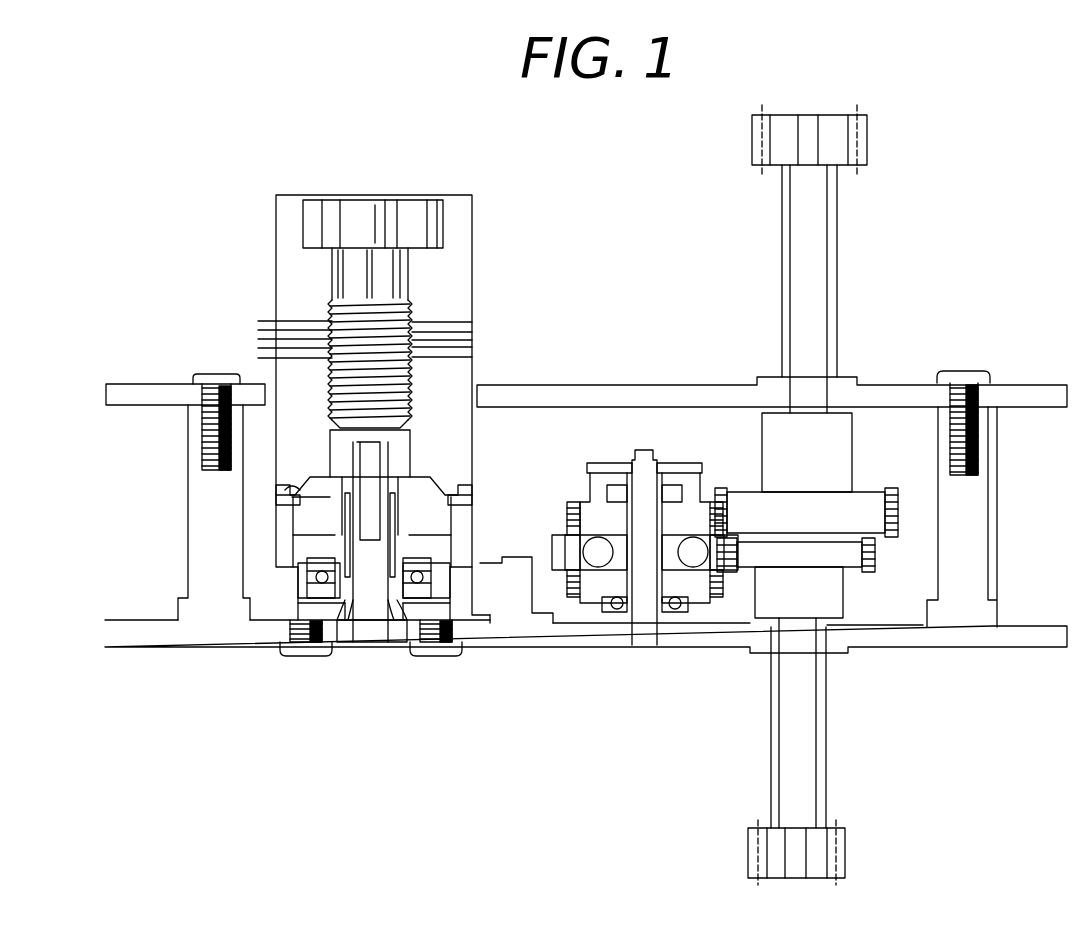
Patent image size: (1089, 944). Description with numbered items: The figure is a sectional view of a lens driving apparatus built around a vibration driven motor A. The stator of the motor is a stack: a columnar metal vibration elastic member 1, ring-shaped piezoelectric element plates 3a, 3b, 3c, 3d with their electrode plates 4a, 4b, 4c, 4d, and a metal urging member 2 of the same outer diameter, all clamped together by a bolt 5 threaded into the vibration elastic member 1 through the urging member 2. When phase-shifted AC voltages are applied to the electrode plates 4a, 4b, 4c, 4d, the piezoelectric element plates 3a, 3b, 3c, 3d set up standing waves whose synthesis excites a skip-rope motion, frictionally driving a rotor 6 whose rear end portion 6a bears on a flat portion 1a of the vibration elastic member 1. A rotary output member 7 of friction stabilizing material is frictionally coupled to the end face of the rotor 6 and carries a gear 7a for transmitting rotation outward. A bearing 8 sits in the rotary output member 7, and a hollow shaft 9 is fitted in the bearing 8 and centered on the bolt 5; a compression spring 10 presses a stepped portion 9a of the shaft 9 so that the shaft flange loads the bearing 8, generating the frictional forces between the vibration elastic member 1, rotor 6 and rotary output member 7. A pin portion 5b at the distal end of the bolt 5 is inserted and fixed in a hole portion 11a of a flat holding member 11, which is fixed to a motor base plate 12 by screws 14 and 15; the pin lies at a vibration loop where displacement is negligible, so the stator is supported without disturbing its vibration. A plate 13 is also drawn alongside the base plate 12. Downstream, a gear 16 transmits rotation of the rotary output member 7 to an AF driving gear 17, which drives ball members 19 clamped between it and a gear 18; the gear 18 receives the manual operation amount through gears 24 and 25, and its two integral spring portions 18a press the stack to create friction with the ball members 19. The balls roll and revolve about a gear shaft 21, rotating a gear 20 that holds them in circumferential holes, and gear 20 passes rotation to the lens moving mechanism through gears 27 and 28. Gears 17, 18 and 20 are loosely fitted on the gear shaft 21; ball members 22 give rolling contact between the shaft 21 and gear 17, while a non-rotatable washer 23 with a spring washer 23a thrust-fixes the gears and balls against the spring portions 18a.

The vibration elastic member 1 is at (517, 394).
The flat portion 1a is at (463, 478).
The urging member 2 is at (290, 263).
The piezoelectric element plate 3a is at (468, 357).
The piezoelectric element plate 3b is at (467, 343).
The piezoelectric element plate 3c is at (470, 330).
The piezoelectric element plate 3d is at (452, 308).
The electrode plate 4a is at (262, 358).
The electrode plate 4b is at (262, 342).
The electrode plate 4c is at (262, 330).
The electrode plate 4d is at (268, 321).
The bolt 5 is at (385, 205).
The pin portion 5b is at (355, 625).
The rotor 6 is at (455, 535).
The rear end portion 6a is at (330, 495).
The rotary output member 7 is at (455, 575).
The gear 7a is at (312, 580).
The bearing 8 is at (318, 577).
The hollow shaft 9 is at (415, 600).
The stepped portion 9a is at (352, 600).
The compression spring 10 is at (395, 640).
The holding member 11 is at (310, 600).
The hole portion 11a is at (365, 640).
The motor base plate 12 is at (130, 645).
The upper plate 13 is at (120, 385).
The screw 14 is at (462, 658).
The screw 15 is at (290, 656).
The gear 16 is at (540, 645).
The AF driving gear 17 is at (598, 625).
The gear 18 is at (590, 505).
The spring portion 18a is at (620, 465).
The ball member 19 is at (693, 560).
The gear 20 is at (720, 615).
The gear shaft 21 is at (645, 645).
The ball member 22 is at (672, 620).
The washer 23 is at (700, 470).
The spring washer 23a is at (675, 465).
The gear 24 is at (838, 165).
The gear 25 is at (870, 505).
The gear 27 is at (850, 562).
The gear 28 is at (820, 840).
The vibration driven motor A is at (329, 195).